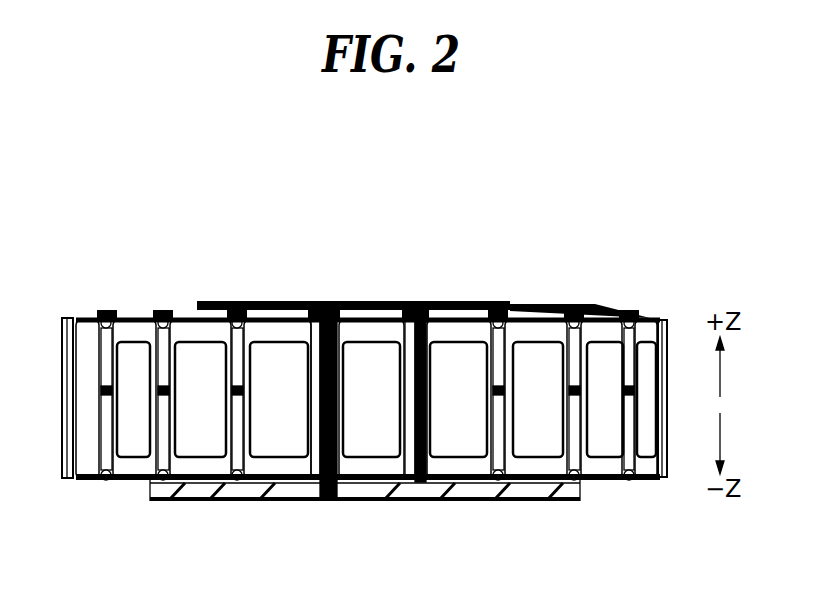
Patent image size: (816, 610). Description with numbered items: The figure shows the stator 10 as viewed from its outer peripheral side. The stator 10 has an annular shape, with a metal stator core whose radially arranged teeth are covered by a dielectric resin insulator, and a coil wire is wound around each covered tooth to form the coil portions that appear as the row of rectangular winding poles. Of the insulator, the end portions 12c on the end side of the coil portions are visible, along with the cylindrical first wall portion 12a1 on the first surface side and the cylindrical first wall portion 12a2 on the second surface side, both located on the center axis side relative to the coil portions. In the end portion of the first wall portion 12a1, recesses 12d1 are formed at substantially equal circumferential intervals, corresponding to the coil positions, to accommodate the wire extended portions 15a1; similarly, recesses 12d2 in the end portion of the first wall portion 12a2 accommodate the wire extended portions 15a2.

The stator 10 is at (378, 204).
The end portions 12c is at (188, 330).
The first wall portion 12a1 is at (445, 313).
The first wall portion 12a2 is at (341, 492).
The recesses 12d1 is at (358, 301).
The recesses 12d2 is at (293, 511).
The wire extended portions 15a1 is at (587, 304).
The wire extended portions 15a2 is at (577, 507).